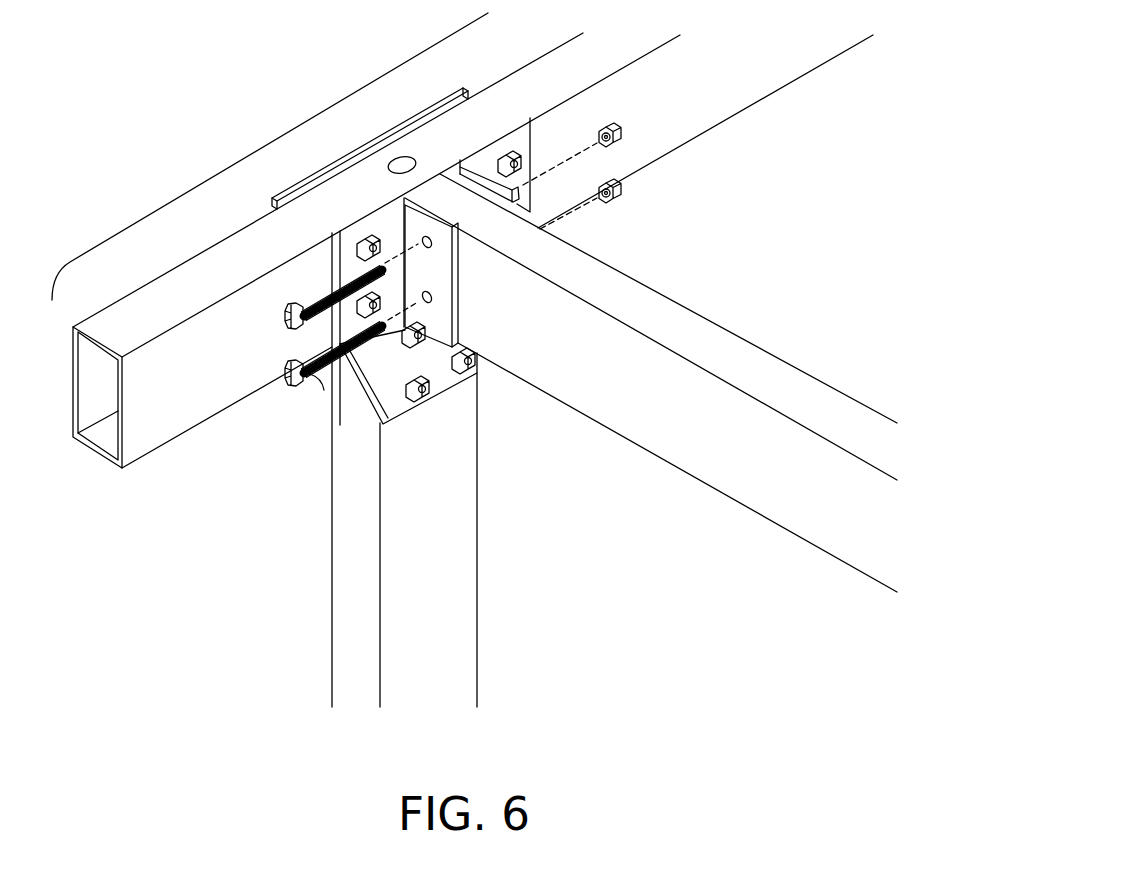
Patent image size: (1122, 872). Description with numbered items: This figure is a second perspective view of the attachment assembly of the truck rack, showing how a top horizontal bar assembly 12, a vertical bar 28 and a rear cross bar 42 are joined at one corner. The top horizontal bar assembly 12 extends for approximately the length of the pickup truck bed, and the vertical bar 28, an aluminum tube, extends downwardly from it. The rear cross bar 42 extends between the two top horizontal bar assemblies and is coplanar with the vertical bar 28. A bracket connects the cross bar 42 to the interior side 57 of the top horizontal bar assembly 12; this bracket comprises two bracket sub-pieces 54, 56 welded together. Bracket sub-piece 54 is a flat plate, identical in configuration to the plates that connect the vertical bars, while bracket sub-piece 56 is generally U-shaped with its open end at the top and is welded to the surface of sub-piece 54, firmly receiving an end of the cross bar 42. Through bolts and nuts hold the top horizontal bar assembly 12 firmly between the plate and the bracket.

The top horizontal bar assembly 12 is at (397, 66).
The vertical bar 28 is at (433, 498).
The rear cross bar 42 is at (732, 453).
The bracket sub-piece 54 is at (493, 157).
The bracket sub-piece 56 is at (460, 292).
The interior side 57 is at (695, 93).